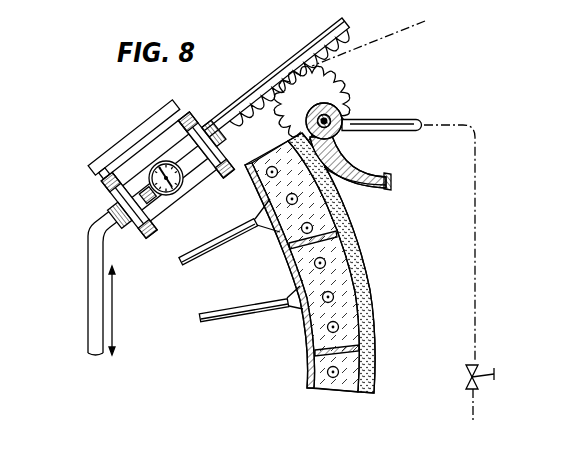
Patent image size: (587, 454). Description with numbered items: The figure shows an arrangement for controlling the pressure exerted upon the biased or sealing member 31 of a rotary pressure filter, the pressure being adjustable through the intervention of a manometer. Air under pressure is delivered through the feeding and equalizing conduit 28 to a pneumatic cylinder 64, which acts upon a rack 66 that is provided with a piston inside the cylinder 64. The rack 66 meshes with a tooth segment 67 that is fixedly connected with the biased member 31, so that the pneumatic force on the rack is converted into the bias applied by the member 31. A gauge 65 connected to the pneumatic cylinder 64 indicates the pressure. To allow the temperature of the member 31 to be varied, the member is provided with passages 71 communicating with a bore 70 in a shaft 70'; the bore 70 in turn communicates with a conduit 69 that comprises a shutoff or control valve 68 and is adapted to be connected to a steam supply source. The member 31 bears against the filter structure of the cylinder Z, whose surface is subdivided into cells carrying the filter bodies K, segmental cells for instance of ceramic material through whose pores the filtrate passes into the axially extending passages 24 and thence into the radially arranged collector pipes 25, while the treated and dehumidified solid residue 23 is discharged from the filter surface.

The dehumidified solid residue 23 is at (325, 263).
The passages 24 is at (362, 280).
The collector pipes 25 is at (232, 310).
The feeding and equalizing conduit 28 is at (87, 266).
The biased or sealing member 31 is at (392, 182).
The pneumatic cylinder 64 is at (192, 128).
The gauge 65 is at (183, 199).
The rack 66 is at (354, 37).
The tooth segment 67 is at (350, 82).
The shutoff or control valve 68 is at (477, 370).
The conduit 69 is at (417, 120).
The bore 70 is at (350, 118).
The shaft 70' is at (354, 138).
The passages 71 is at (378, 191).
The filter body K is at (370, 318).
The filter cylinder Z is at (305, 347).